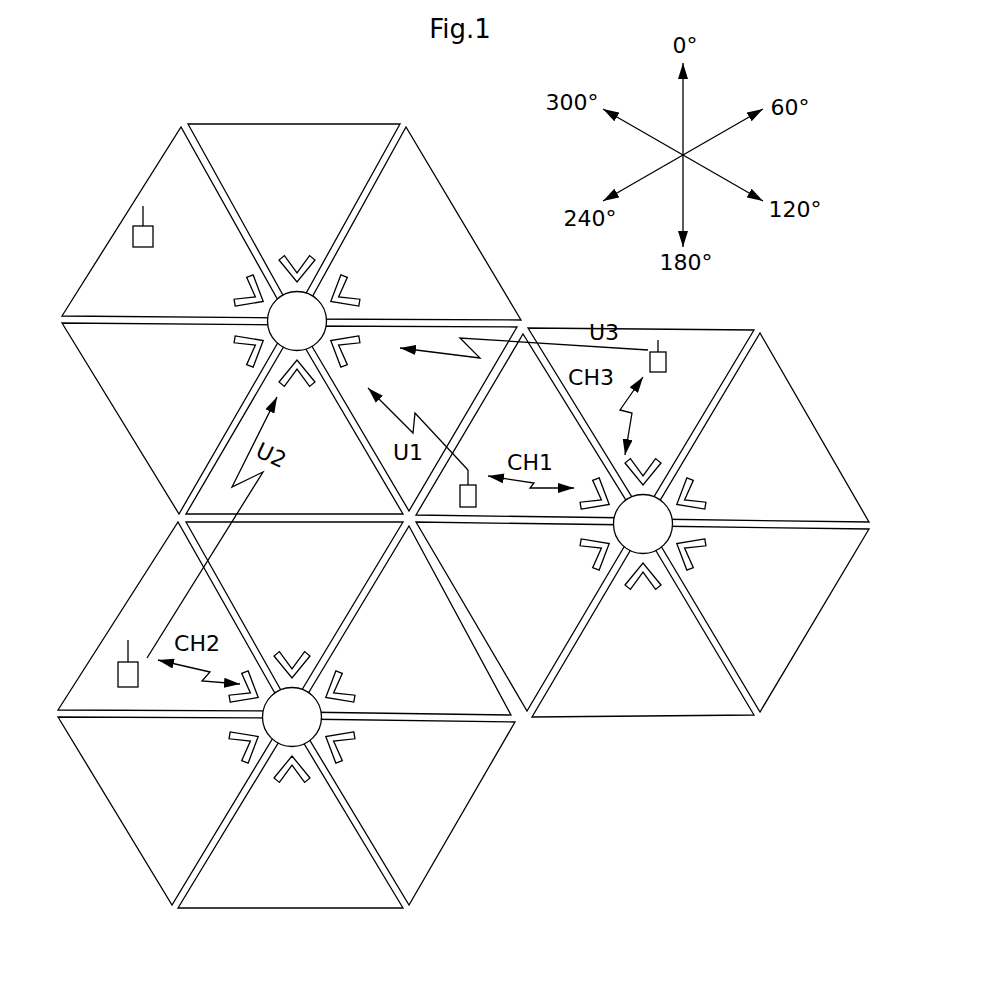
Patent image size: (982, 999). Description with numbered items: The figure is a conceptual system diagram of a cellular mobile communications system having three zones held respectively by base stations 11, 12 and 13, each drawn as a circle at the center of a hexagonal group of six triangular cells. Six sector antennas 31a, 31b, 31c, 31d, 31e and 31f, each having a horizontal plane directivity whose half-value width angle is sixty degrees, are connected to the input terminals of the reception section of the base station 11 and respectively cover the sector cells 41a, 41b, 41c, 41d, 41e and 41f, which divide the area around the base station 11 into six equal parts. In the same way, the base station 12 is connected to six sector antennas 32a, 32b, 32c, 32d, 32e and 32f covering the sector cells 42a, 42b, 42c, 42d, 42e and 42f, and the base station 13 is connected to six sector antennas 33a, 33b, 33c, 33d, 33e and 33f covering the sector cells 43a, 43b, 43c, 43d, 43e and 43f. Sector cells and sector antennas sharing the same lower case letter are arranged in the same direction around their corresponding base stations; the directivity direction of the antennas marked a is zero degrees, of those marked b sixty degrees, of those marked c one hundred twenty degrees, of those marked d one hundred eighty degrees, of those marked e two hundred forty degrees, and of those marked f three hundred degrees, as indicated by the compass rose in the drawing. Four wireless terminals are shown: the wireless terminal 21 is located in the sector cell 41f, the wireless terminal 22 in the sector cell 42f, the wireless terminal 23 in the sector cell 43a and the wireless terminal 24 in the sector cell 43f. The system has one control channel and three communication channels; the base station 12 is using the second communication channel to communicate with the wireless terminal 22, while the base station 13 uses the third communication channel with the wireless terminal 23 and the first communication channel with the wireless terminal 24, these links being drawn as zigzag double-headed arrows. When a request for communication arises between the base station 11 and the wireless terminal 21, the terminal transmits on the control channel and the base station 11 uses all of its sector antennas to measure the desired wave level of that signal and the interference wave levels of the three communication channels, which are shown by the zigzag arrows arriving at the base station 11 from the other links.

The base station 11 is at (332, 321).
The base station 12 is at (326, 716).
The base station 13 is at (677, 523).
The wireless terminal 21 is at (155, 236).
The wireless terminal 22 is at (139, 680).
The wireless terminal 23 is at (667, 366).
The wireless terminal 24 is at (477, 500).
The sector antenna 31a is at (299, 261).
The sector antenna 31b is at (342, 282).
The sector antenna 31c is at (342, 364).
The sector antenna 31d is at (312, 384).
The sector antenna 31e is at (250, 369).
The sector antenna 31f is at (236, 306).
The sector antenna 32a is at (297, 654).
The sector antenna 32b is at (341, 677).
The sector antenna 32c is at (350, 752).
The sector antenna 32d is at (308, 781).
The sector antenna 32e is at (250, 766).
The sector antenna 32f is at (231, 703).
The sector antenna 33a is at (647, 465).
The sector antenna 33b is at (690, 478).
The sector antenna 33c is at (706, 557).
The sector antenna 33d is at (653, 586).
The sector antenna 33e is at (600, 570).
The sector antenna 33f is at (590, 507).
The sector cell 41a is at (380, 123).
The sector cell 41b is at (460, 206).
The sector cell 41c is at (472, 408).
The sector cell 41d is at (345, 514).
The sector cell 41e is at (112, 402).
The sector cell 41f is at (103, 258).
The sector cell 42a is at (350, 523).
The sector cell 42b is at (410, 565).
The sector cell 42c is at (428, 880).
The sector cell 42d is at (383, 910).
The sector cell 42e is at (158, 878).
The sector cell 42f is at (93, 655).
The sector cell 43a is at (716, 328).
The sector cell 43b is at (820, 442).
The sector cell 43c is at (788, 660).
The sector cell 43d is at (660, 716).
The sector cell 43e is at (552, 658).
The sector cell 43f is at (536, 372).